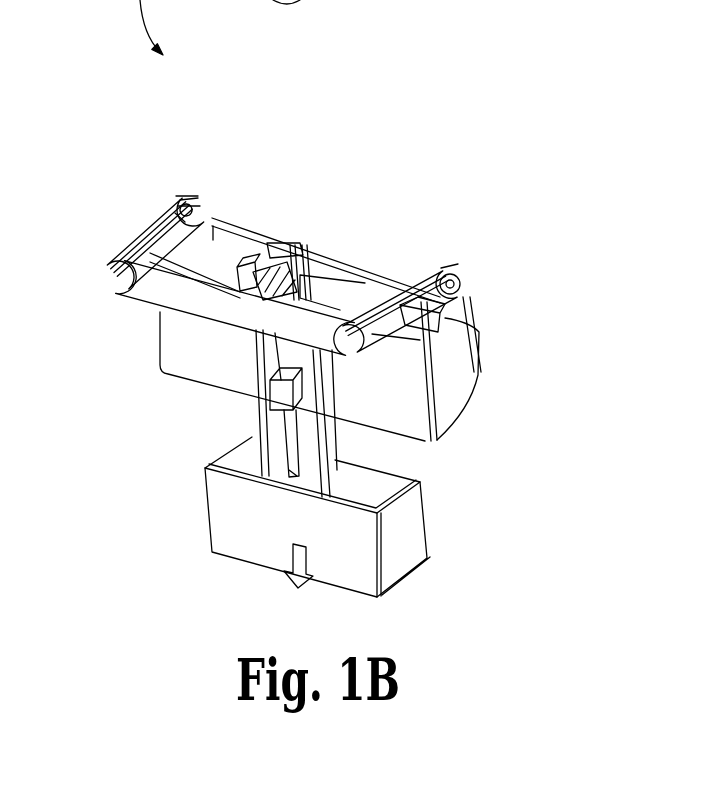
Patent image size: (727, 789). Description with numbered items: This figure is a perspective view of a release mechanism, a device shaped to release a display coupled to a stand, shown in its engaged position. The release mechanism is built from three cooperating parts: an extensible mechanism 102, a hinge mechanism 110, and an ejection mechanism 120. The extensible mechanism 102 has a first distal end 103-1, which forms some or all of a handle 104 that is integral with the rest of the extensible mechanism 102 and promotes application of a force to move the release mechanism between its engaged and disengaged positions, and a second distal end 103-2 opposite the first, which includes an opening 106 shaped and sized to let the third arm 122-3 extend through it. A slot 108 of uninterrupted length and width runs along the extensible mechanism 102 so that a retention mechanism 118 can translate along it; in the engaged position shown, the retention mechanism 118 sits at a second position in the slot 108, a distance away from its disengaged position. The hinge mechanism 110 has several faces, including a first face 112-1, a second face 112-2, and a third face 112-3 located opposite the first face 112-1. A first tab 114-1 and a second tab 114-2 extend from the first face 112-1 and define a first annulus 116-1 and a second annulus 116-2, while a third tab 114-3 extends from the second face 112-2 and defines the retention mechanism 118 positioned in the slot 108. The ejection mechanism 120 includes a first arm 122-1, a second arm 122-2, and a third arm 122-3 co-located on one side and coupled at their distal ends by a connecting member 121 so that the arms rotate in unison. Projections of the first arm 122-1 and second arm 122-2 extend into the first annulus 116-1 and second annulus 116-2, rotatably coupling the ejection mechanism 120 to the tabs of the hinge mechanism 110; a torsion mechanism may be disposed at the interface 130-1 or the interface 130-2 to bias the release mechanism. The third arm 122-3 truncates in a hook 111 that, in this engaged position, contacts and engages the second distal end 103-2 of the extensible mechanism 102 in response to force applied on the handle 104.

The extensible mechanism 102 is at (285, 413).
The first distal end 103-1 is at (417, 570).
The second distal end 103-2 is at (322, 274).
The handle 104 is at (317, 530).
The opening 106 is at (310, 273).
The slot 108 is at (303, 438).
The hinge mechanism 110 is at (295, 402).
The hook 111 is at (303, 272).
The first face 112-1 is at (212, 247).
The second face 112-2 is at (200, 360).
The third face 112-3 is at (410, 445).
The first tab 114-1 is at (179, 185).
The second tab 114-2 is at (458, 252).
The third tab 114-3 is at (303, 380).
The first annulus 116-1 is at (192, 192).
The second annulus 116-2 is at (462, 282).
The retention mechanism 118 is at (303, 408).
The ejection mechanism 120 is at (305, 234).
The connecting member 121 is at (147, 291).
The first arm 122-1 is at (143, 232).
The second arm 122-2 is at (373, 357).
The third arm 122-3 is at (263, 252).
The interface 130-1 is at (467, 297).
The interface 130-2 is at (180, 200).